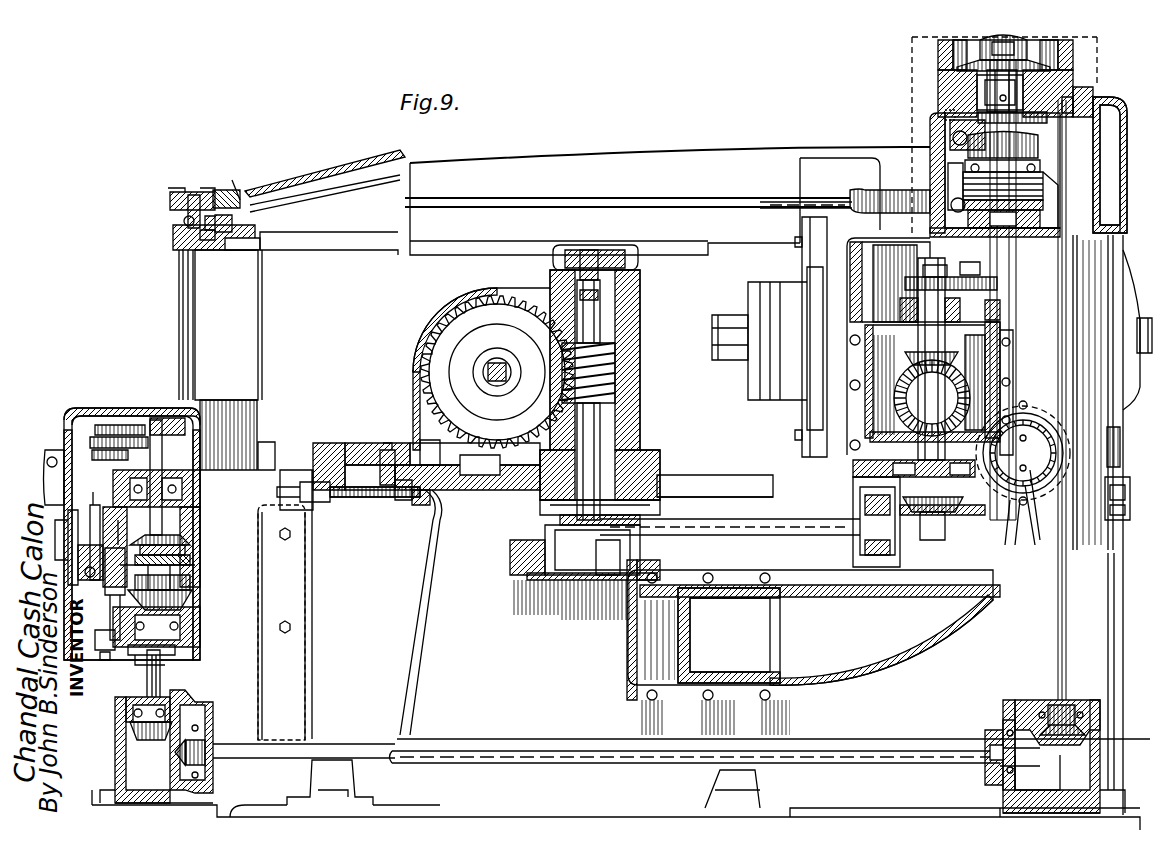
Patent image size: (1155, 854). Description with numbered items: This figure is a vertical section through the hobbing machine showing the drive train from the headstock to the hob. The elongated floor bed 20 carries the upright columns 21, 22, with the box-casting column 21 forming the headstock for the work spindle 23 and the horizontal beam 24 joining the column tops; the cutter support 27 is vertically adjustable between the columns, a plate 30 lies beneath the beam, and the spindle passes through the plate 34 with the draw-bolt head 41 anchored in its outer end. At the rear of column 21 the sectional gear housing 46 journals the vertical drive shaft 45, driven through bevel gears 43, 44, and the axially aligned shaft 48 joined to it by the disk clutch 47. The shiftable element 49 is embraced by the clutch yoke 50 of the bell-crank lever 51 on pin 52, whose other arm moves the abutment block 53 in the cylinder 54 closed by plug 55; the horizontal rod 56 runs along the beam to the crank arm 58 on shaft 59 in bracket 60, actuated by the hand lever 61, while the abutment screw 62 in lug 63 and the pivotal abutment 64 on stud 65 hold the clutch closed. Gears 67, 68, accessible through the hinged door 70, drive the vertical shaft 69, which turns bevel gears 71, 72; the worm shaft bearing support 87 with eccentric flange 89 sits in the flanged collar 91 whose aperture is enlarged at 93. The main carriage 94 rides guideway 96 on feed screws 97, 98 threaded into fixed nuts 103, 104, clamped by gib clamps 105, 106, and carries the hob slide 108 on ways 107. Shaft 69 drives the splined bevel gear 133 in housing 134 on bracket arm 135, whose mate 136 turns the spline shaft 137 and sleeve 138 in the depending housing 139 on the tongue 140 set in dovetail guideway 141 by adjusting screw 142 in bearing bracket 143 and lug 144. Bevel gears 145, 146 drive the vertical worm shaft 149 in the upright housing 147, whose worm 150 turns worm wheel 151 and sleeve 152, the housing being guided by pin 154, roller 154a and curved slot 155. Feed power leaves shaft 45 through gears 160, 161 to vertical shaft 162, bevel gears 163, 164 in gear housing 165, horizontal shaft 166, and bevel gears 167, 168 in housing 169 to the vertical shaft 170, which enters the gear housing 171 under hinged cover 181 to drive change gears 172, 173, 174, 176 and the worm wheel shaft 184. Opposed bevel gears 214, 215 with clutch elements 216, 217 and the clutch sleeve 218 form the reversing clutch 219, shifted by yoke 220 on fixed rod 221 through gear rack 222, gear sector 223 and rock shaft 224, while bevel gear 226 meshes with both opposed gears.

The floor bed 20 is at (532, 817).
The column 21 is at (1105, 570).
The column 22 is at (263, 350).
The work spindle 23 is at (732, 362).
The horizontal beam 24 is at (680, 160).
The cutter support 27 is at (702, 466).
The plate 30 is at (490, 250).
The plate 34 is at (1112, 292).
The head 41 is at (1137, 340).
The bevel gear 43 is at (1030, 42).
The bevel gear 44 is at (940, 60).
The vertical drive shaft 45 is at (1040, 145).
The sectional gear housing 46 is at (938, 44).
The disk clutch 47 is at (1045, 205).
The shaft 48 is at (1015, 248).
The shiftable element 49 is at (1045, 180).
The clutch yoke 50 is at (945, 133).
The bell-crank lever 51 is at (950, 175).
The pin 52 is at (935, 118).
The abutment block 53 is at (950, 205).
The cylinder 54 is at (868, 190).
The plug 55 is at (840, 204).
The horizontal rod 56 is at (583, 198).
The crank arm 58 is at (170, 205).
The shaft 59 is at (178, 273).
The bracket 60 is at (173, 243).
The hand lever 61 is at (370, 167).
The abutment screw 62 is at (183, 224).
The lug 63 is at (196, 200).
The pivotal abutment 64 is at (234, 221).
The pivot stud 65 is at (232, 192).
The gear 67 is at (1005, 292).
The gear 68 is at (905, 284).
The vertical shaft 69 is at (948, 307).
The hinged door 70 is at (850, 250).
The bevel gear 71 is at (895, 355).
The bevel gear 72 is at (905, 380).
The bearing support 87 is at (1012, 470).
The eccentric mounting flange 89 is at (1065, 420).
The flanged collar 91 is at (1040, 412).
The enlarged aperture 93 is at (1030, 478).
The main carriage 94 is at (522, 752).
The guideway 96 is at (270, 442).
The feed screw 97 is at (760, 754).
The feed screw 98 is at (355, 758).
The fixed nut 103 is at (738, 792).
The fixed nut 104 is at (313, 778).
The gib clamp 105 is at (808, 518).
The gib clamp 106 is at (300, 569).
The longitudinal ways 107 is at (765, 462).
The hob slide 108 is at (360, 445).
The bevel gear 133 is at (952, 514).
The housing 134 is at (988, 580).
The bracket arm 135 is at (915, 660).
The bevel gear 136 is at (903, 555).
The spline shaft 137 is at (672, 578).
The sleeve 138 is at (590, 580).
The depending housing 139 is at (525, 582).
The tongue 140 is at (475, 490).
The dovetail guideway 141 is at (352, 498).
The adjusting screw 142 is at (430, 510).
The bearing bracket 143 is at (316, 446).
The lug 144 is at (415, 506).
The bevel gear 145 is at (560, 580).
The bevel gear 146 is at (662, 510).
The upright housing 147 is at (640, 360).
The vertical worm shaft 149 is at (602, 420).
The worm 150 is at (620, 379).
The worm wheel 151 is at (460, 318).
The sleeve 152 is at (480, 372).
The pin 154 is at (388, 448).
The roller 154a is at (392, 502).
The curved slot 155 is at (430, 438).
The gear 160 is at (978, 113).
The gear 161 is at (1120, 110).
The vertical shaft 162 is at (1068, 590).
The bevel gear 163 is at (1095, 715).
The bevel gear 164 is at (1040, 778).
The gear housing 165 is at (1015, 716).
The horizontal shaft 166 is at (958, 752).
The bevel gear 167 is at (175, 768).
The bevel gear 168 is at (130, 730).
The housing 169 is at (122, 748).
The vertical shaft 170 is at (165, 695).
The gear housing 171 is at (64, 481).
The change gear 172 is at (172, 470).
The change gear 173 is at (88, 452).
The change gear 174 is at (92, 429).
The change gear 176 is at (120, 416).
The hinged cover 181 is at (120, 412).
The shaft 184 is at (94, 520).
The bevel gear 214 is at (185, 540).
The bevel gear 215 is at (195, 615).
The clutch element 216 is at (188, 551).
The clutch element 217 is at (190, 585).
The clutch sleeve 218 is at (197, 571).
The reversing clutch 219 is at (190, 598).
The yoke 220 is at (103, 655).
The fixed rod 221 is at (145, 658).
The gear rack 222 is at (108, 590).
The gear sector 223 is at (85, 550).
The rock shaft 224 is at (68, 556).
The bevel gear 226 is at (190, 561).